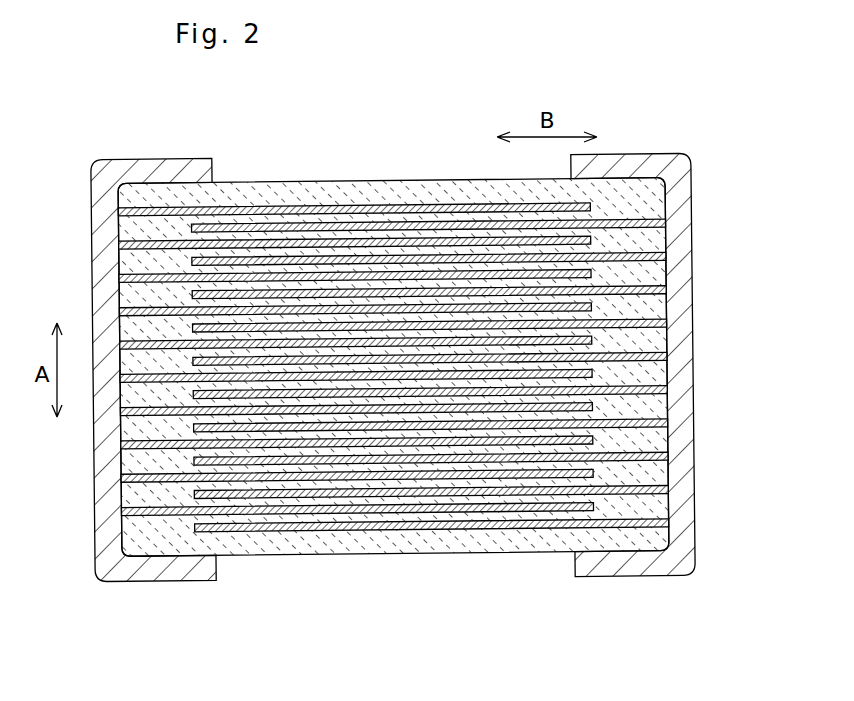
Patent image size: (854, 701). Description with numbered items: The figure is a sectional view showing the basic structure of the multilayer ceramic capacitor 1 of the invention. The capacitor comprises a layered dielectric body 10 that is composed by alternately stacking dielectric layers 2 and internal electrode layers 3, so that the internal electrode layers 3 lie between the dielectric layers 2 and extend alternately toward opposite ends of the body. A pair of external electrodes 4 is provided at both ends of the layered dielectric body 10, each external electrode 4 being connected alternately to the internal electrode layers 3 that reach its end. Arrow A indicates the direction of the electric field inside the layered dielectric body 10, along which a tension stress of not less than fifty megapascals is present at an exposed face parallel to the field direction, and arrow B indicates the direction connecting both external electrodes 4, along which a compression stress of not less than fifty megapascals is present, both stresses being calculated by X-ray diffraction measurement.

The multilayer ceramic capacitor 1 is at (729, 105).
The dielectric layer 2 is at (305, 206).
The internal electrode layer 3 is at (430, 223).
The external electrode 4 is at (672, 154).
The layered dielectric body 10 is at (533, 554).